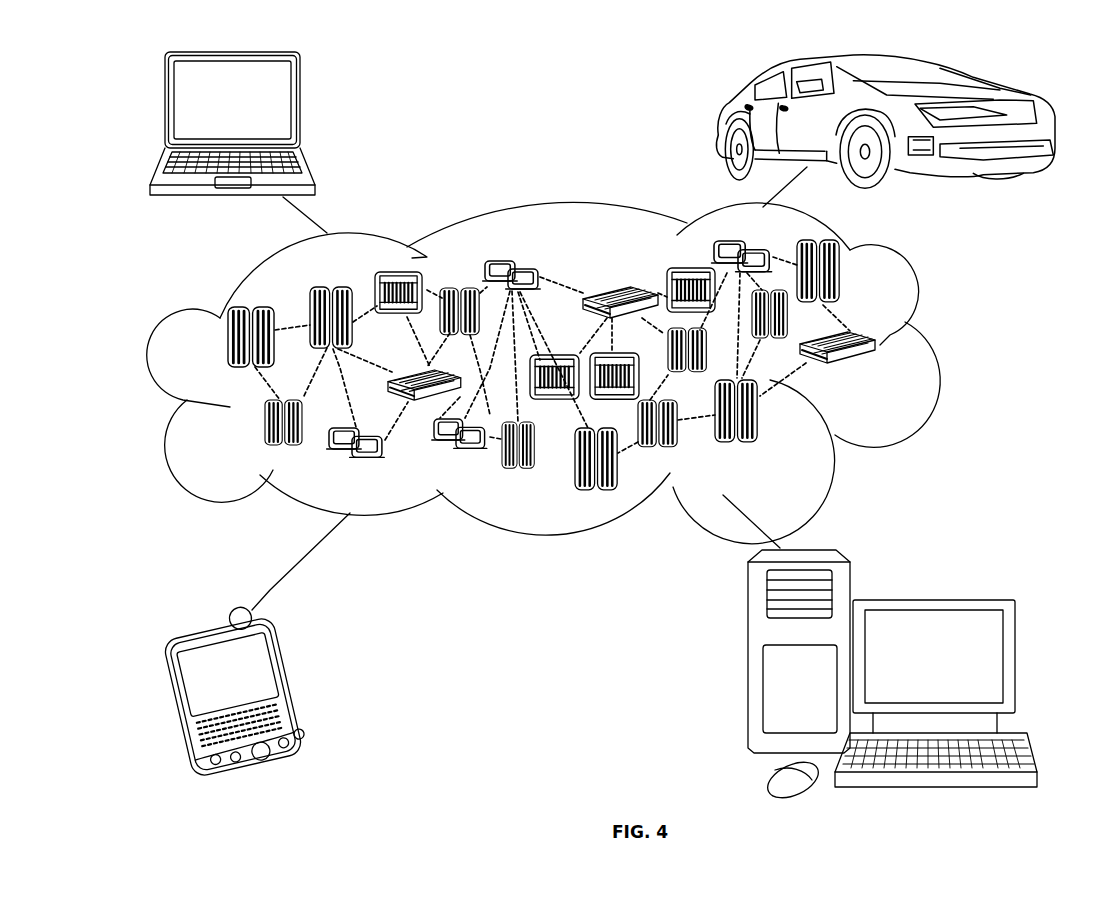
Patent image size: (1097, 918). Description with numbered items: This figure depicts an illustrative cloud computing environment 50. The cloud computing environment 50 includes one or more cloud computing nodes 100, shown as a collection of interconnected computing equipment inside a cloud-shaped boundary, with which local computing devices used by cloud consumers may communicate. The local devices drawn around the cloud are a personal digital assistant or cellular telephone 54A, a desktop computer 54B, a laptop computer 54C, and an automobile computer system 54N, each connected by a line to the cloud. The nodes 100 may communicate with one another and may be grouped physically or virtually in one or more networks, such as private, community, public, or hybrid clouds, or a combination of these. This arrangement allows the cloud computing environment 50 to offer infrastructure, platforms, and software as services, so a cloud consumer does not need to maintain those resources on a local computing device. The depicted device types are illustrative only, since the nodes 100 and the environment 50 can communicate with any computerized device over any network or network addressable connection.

The cloud computing environment 50 is at (933, 345).
The personal digital assistant (PDA) or cellular telephone 54A is at (291, 681).
The desktop computer 54B is at (932, 601).
The laptop computer 54C is at (300, 105).
The automobile computer system 54N is at (722, 122).
The cloud computing nodes 100 is at (880, 373).